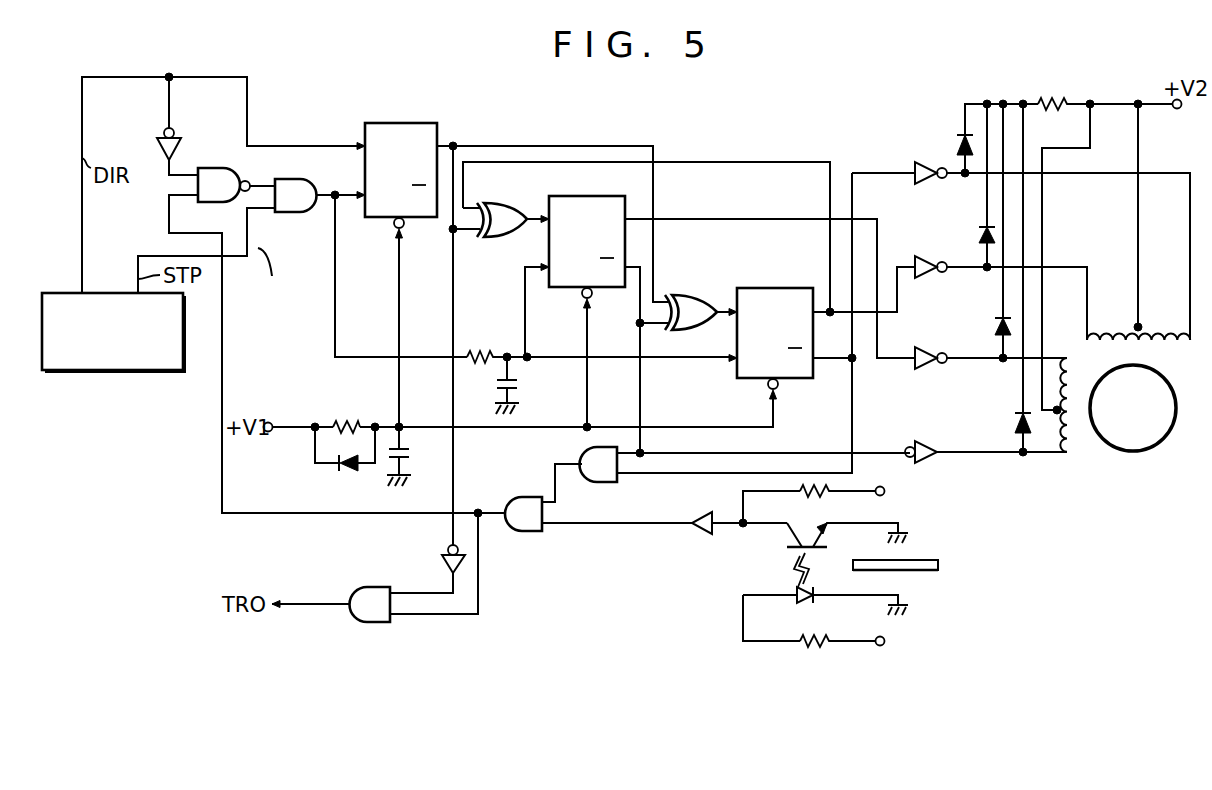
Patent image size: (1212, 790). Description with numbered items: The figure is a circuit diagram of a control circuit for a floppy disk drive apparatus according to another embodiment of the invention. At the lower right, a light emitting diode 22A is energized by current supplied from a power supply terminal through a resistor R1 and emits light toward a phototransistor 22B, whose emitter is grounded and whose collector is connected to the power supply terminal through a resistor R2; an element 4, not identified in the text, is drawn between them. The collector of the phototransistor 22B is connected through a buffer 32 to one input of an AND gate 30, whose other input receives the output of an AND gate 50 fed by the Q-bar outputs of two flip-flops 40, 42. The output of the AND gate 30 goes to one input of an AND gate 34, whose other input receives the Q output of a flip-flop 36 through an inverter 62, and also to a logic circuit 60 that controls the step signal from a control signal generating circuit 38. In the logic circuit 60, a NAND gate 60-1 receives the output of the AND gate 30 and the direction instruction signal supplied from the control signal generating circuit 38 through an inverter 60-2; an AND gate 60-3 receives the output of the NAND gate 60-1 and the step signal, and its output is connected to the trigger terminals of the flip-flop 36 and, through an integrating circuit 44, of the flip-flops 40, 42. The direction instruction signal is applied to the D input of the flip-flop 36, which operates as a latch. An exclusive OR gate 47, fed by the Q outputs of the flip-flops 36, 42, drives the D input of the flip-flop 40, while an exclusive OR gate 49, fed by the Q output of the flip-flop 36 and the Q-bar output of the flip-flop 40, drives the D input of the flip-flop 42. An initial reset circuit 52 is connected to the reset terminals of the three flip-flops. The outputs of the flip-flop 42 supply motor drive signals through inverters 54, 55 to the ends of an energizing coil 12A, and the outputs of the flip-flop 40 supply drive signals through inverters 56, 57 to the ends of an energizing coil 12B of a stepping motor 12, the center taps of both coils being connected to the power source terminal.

The inverter 60-2 is at (195, 130).
The NAND gate 60-1 is at (208, 203).
The AND gate 60-3 is at (290, 213).
The logic circuit 60 is at (278, 274).
The control signal generating circuit 38 is at (118, 371).
The flip-flop 36 is at (398, 121).
The exclusive OR gate 47 is at (502, 238).
The flip-flop 40 is at (560, 289).
The exclusive OR gate 49 is at (694, 294).
The flip-flop 42 is at (735, 370).
The integrating circuit 44 is at (480, 364).
The initial reset circuit 52 is at (329, 471).
The inverter 62 is at (441, 562).
The AND gate 34 is at (371, 623).
The AND gate 30 is at (527, 532).
The AND gate 50 is at (612, 483).
The buffer 32 is at (706, 535).
The phototransistor 22B is at (786, 542).
The light emitting diode 22A is at (790, 588).
The resistor R1 is at (812, 647).
The resistor R2 is at (815, 497).
The slit plate 4 is at (928, 556).
The inverter 54 is at (930, 163).
The inverter 55 is at (930, 257).
The inverter 56 is at (930, 352).
The inverter 57 is at (930, 439).
The energizing coil 12A is at (1160, 347).
The energizing coil 12B is at (1062, 458).
The stepping motor 12 is at (1115, 453).